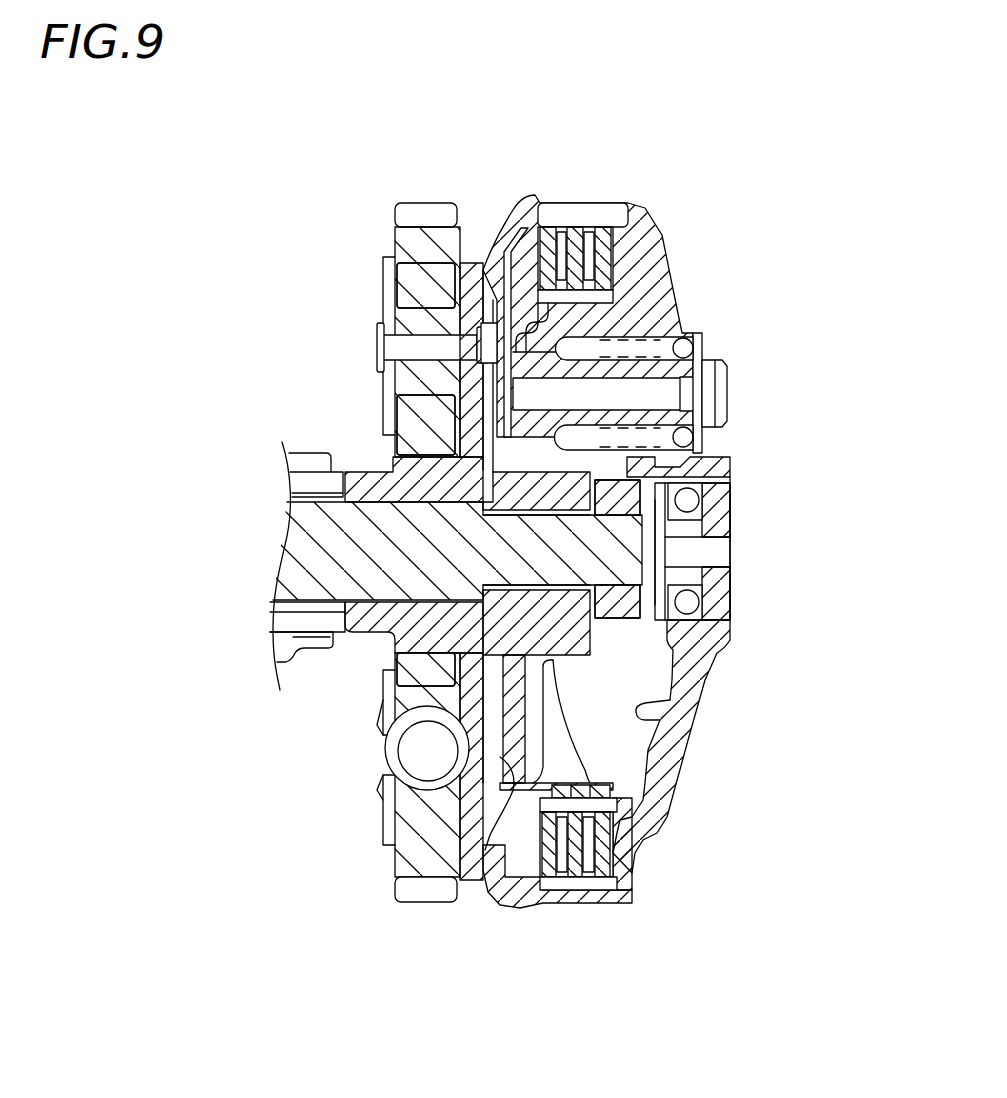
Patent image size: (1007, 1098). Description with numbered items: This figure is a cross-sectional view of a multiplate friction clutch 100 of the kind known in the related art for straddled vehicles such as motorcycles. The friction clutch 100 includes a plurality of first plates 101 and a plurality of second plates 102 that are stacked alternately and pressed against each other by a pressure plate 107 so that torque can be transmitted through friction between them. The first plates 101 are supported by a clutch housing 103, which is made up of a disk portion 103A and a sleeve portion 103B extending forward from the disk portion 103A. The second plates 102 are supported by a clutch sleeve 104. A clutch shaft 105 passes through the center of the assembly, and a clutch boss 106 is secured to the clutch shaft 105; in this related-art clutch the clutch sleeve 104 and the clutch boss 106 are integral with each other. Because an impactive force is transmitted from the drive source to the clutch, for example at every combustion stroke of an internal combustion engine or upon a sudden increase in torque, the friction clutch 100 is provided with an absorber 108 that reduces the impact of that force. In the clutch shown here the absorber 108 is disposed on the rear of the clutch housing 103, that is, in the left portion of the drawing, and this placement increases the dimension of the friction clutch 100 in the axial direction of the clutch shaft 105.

The multiplate friction clutch 100 is at (790, 252).
The first plates 101 is at (598, 205).
The second plates 102 is at (588, 251).
The clutch housing 103 is at (503, 228).
The disk portion 103A is at (500, 890).
The sleeve portion 103B is at (560, 905).
The clutch sleeve 104 is at (452, 228).
The clutch shaft 105 is at (378, 523).
The clutch boss 106 is at (577, 657).
The pressure plate 107 is at (700, 692).
The absorber 108 is at (382, 756).